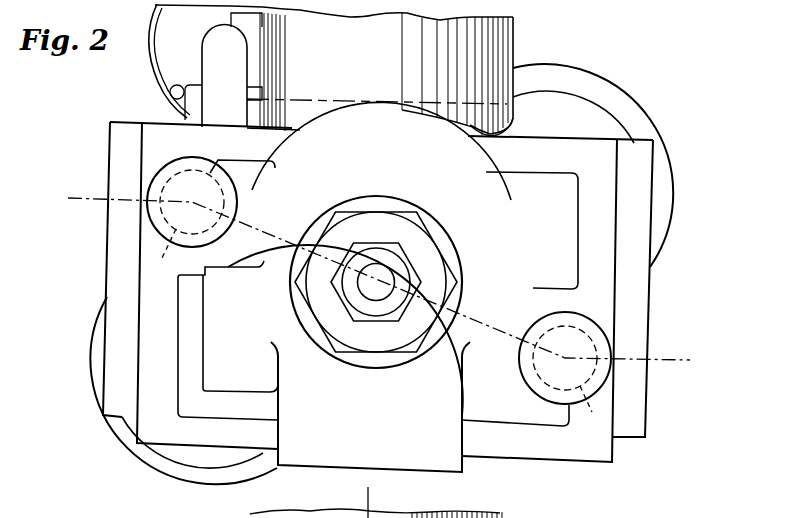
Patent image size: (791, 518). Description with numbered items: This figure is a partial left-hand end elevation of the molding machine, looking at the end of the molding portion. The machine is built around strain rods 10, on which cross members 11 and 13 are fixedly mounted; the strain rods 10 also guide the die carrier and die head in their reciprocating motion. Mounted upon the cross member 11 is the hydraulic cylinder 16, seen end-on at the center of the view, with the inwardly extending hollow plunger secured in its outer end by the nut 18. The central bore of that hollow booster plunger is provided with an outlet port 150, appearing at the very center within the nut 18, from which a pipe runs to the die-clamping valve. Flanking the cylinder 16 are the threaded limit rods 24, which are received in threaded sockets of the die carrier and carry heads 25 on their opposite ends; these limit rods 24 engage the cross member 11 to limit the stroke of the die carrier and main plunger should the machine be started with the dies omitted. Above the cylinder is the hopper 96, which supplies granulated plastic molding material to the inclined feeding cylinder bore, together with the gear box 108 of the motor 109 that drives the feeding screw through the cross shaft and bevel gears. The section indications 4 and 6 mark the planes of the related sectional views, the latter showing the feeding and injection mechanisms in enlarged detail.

The strain rods 10 is at (118, 147).
The cross member 11 is at (143, 288).
The cross member 13 is at (590, 108).
The hydraulic cylinder 16 is at (508, 222).
The nut 18 is at (428, 250).
The threaded limit rods 24 is at (374, 331).
The heads 25 is at (184, 164).
The hopper 96 is at (513, 35).
The gear box 108 is at (213, 48).
The motor 109 is at (163, 60).
The outlet port 150 is at (377, 267).
The section line 4- 4 is at (68, 185).
The section line 6- 6 is at (350, 487).